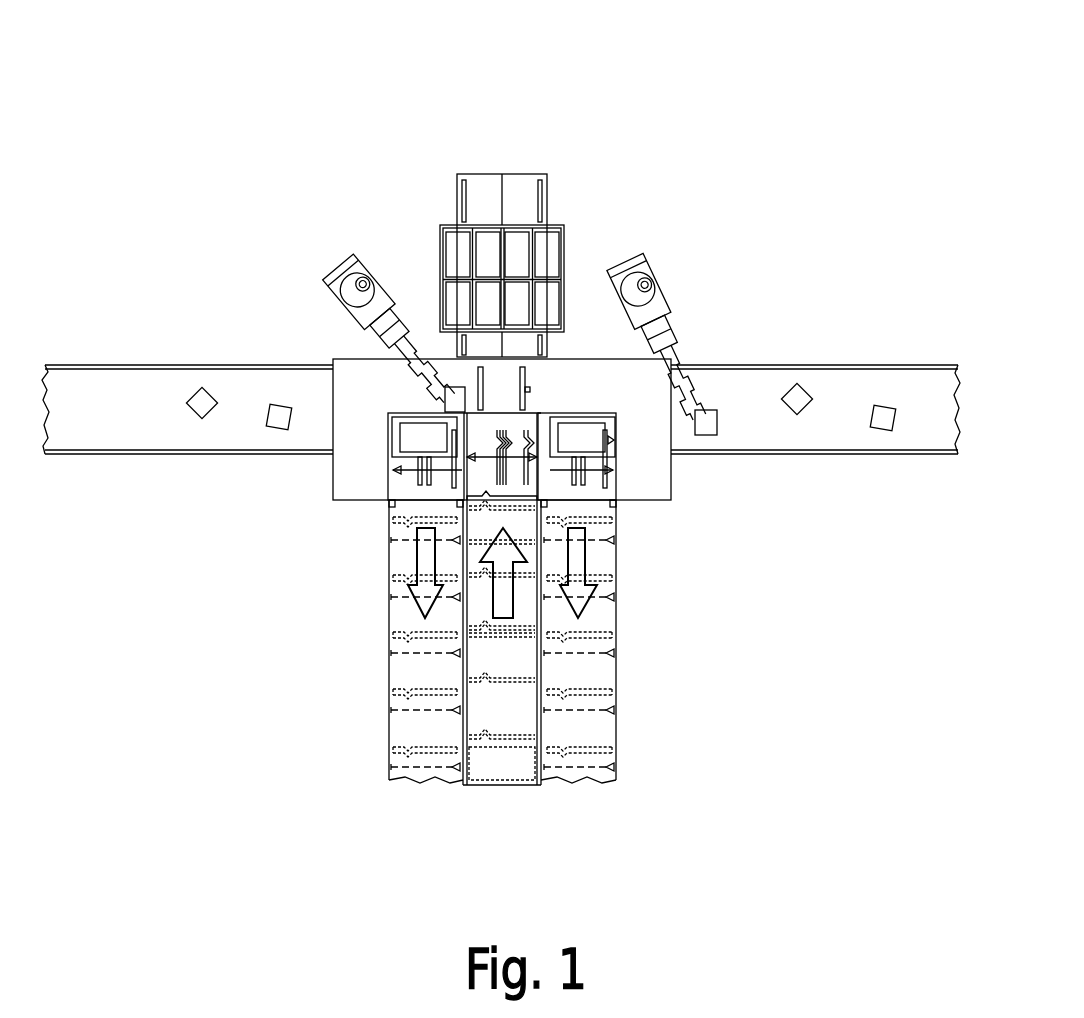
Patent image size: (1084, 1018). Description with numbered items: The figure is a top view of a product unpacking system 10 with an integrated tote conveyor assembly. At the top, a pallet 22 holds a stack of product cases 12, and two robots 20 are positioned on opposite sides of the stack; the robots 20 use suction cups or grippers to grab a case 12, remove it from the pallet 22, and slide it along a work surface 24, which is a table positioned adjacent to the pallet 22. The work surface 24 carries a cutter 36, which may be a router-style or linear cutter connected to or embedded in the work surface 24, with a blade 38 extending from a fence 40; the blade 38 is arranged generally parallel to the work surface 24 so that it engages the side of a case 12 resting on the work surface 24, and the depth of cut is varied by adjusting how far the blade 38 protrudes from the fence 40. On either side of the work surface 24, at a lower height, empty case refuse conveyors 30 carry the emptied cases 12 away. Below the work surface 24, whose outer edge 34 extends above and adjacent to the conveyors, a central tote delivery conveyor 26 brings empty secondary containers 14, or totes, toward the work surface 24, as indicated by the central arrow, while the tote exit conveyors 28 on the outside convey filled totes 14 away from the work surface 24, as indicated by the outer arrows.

The unpacking system 10 is at (541, 113).
The product case 12 is at (564, 226).
The secondary container 14 is at (393, 420).
The robot 20 is at (342, 270).
The pallet 22 is at (482, 175).
The work surface 24 is at (333, 480).
The tote delivery conveyor 26 is at (530, 556).
The tote exit conveyor 28 is at (404, 608).
The empty case refuse conveyor 30 is at (141, 386).
The outer edge 34 is at (598, 417).
The cutter 36 is at (477, 385).
The blade 38 is at (530, 390).
The fence 40 is at (525, 372).